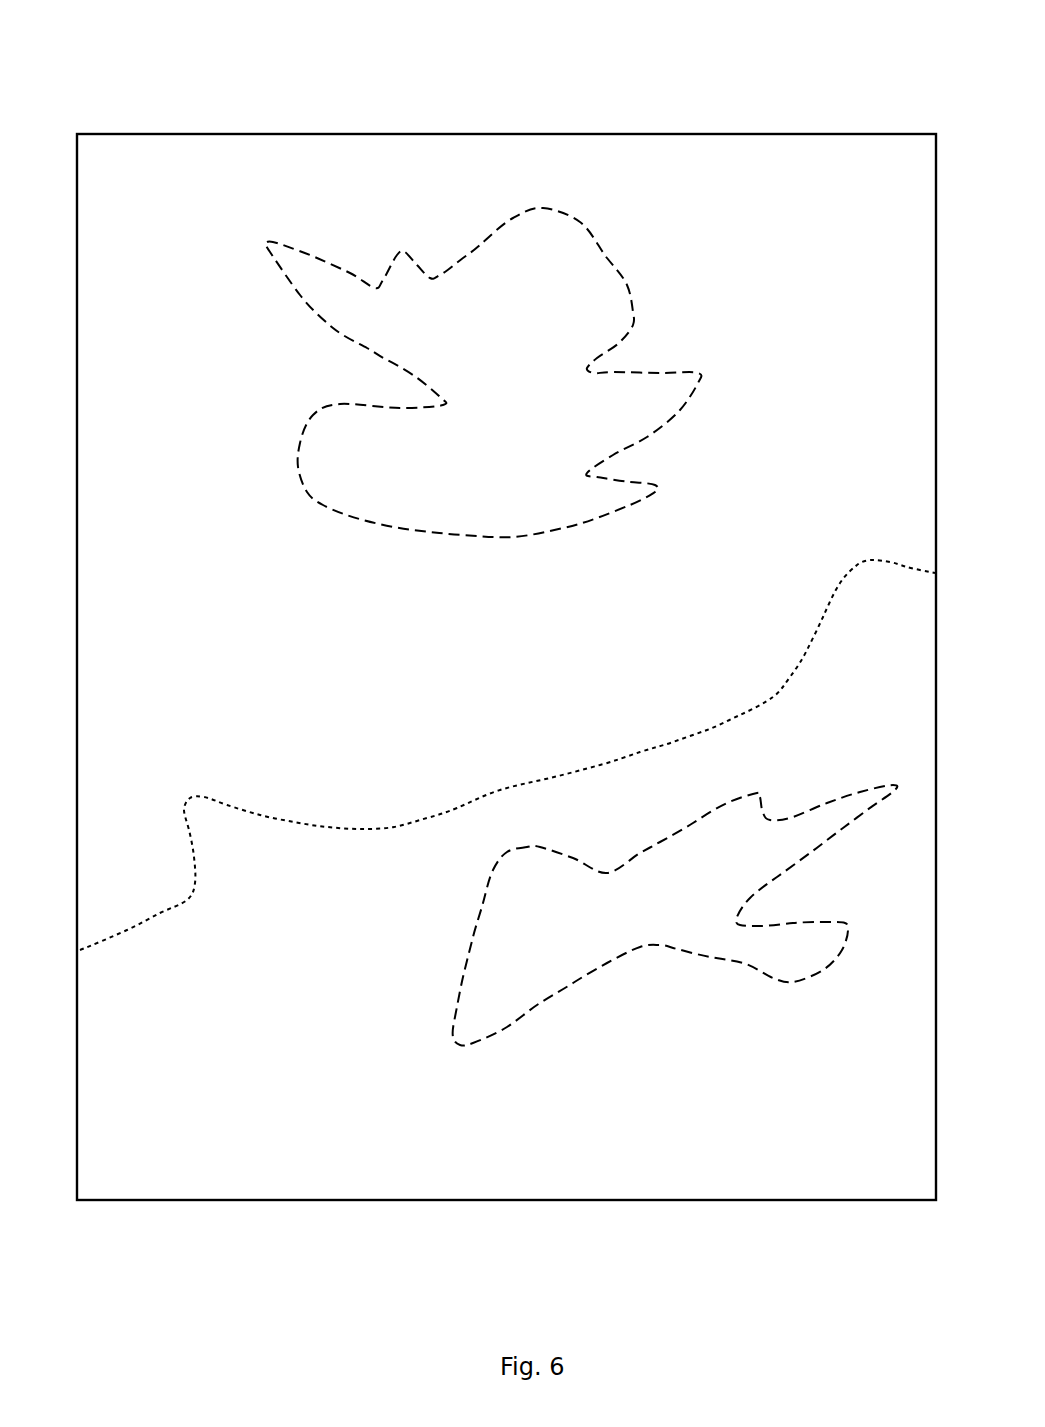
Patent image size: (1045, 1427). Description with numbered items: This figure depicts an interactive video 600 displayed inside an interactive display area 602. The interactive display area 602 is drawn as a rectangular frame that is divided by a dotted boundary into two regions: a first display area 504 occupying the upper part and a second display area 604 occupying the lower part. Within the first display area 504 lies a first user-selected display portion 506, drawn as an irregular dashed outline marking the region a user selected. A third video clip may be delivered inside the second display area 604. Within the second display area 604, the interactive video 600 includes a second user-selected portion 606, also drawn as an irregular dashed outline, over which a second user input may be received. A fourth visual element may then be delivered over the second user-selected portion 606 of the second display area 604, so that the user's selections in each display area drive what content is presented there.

The interactive video 600 is at (104, 56).
The interactive display area 602 is at (620, 133).
The first display area 504 is at (269, 200).
The first user-selected display portion 506 is at (502, 326).
The second display area 604 is at (199, 1092).
The second user-selected portion 606 is at (642, 934).